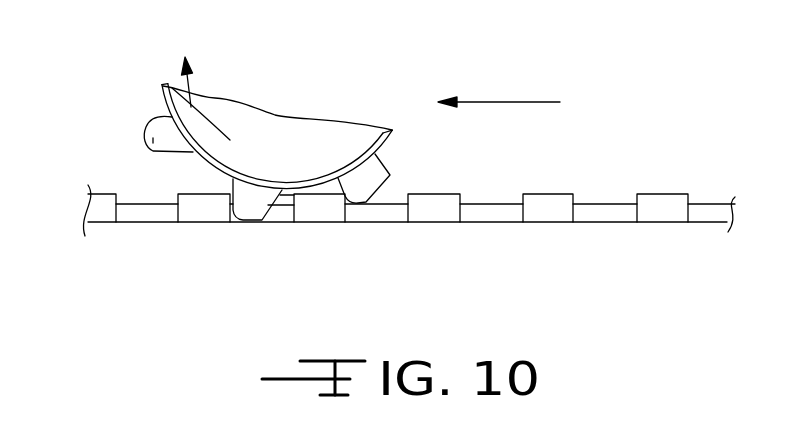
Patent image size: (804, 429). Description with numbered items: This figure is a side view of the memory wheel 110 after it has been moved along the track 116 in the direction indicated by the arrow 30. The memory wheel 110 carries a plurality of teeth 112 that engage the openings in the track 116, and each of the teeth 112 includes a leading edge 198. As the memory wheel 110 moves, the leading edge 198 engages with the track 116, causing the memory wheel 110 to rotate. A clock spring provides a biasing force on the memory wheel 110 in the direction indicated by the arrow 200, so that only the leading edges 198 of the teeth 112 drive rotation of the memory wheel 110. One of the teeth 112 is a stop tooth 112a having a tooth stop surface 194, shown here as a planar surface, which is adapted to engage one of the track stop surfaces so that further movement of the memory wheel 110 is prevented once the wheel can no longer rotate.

The arrow 30 is at (516, 105).
The memory wheel 110 is at (283, 154).
The teeth 112 is at (148, 145).
The stop tooth 112a is at (355, 183).
The track 116 is at (613, 222).
The tooth stop surface 194 is at (386, 168).
The leading edge 198 is at (233, 186).
The arrow 200 is at (211, 82).